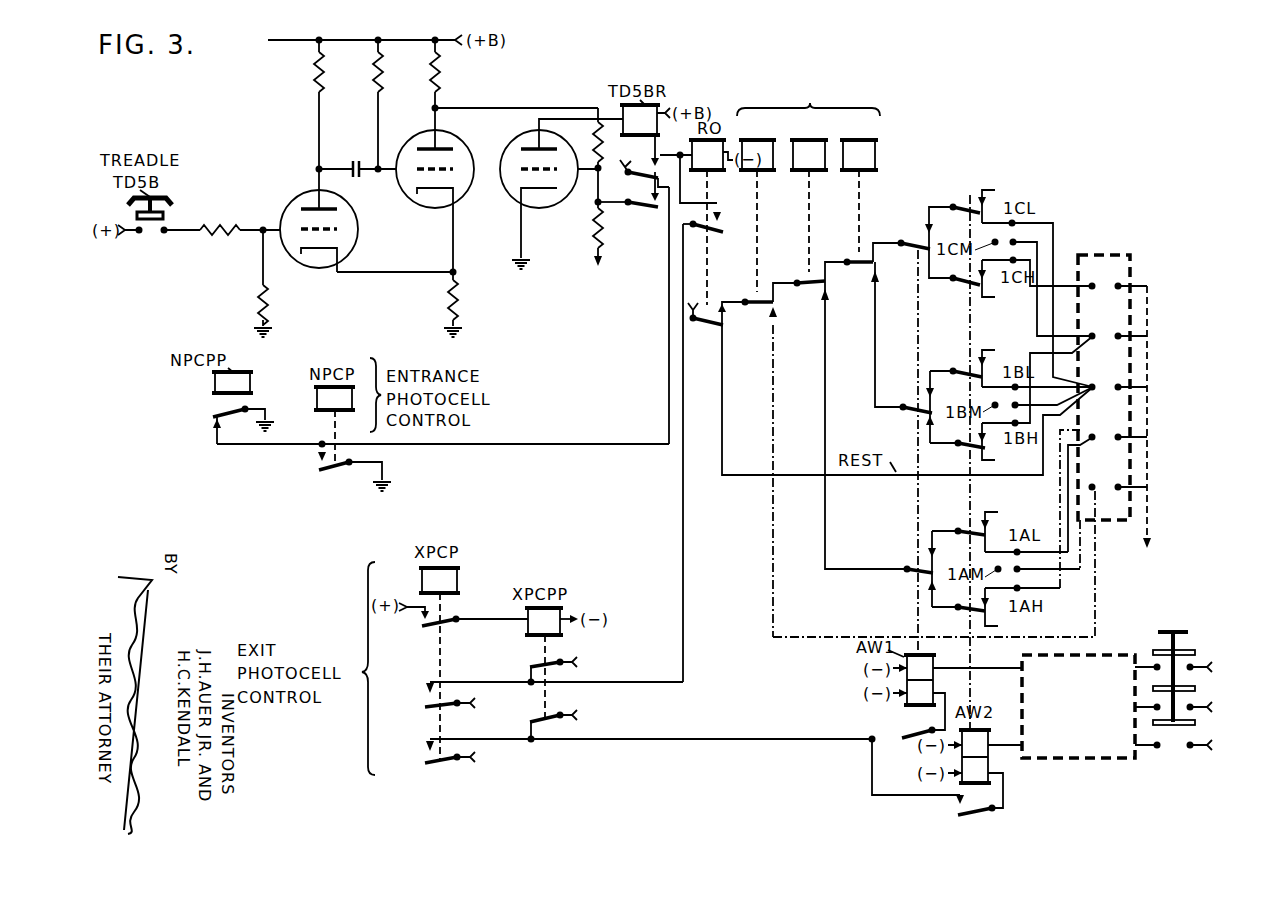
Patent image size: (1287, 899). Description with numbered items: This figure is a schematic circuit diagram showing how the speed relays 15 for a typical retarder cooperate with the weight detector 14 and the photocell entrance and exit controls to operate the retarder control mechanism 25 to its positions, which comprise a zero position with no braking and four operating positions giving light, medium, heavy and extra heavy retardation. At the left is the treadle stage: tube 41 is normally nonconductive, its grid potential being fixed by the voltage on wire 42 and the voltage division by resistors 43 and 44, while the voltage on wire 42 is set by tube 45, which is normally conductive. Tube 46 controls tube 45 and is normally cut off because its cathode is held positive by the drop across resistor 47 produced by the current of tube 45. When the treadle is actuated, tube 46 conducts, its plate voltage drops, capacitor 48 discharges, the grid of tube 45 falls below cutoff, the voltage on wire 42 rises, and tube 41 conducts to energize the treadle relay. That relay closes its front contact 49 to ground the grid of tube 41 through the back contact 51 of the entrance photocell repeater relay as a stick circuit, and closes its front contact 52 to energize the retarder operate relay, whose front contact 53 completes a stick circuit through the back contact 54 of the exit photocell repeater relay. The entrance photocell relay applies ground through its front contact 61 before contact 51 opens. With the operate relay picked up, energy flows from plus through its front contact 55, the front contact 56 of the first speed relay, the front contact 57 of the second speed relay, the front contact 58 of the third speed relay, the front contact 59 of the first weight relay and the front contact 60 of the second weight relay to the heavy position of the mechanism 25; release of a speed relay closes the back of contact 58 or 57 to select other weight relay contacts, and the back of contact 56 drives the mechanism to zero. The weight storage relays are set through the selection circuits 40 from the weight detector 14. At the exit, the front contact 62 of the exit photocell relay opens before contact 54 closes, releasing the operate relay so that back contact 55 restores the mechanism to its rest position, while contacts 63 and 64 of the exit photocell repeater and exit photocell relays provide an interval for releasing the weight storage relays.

The weight detector 14 is at (1180, 632).
The speed relays 15 is at (801, 175).
The retarder control mechanism 25 is at (1090, 250).
The selection circuits 40 is at (1100, 655).
The tube 41 is at (511, 143).
The wire 42 is at (462, 108).
The resistor 43 is at (596, 144).
The resistor 44 is at (594, 222).
The tube 45 is at (409, 141).
The tube 46 is at (296, 195).
The resistor 47 is at (459, 294).
The capacitor 48 is at (355, 161).
The front contact of relay TD5BR 49 is at (628, 214).
The back contact of relay NPCPP 51 is at (230, 422).
The front contact of relay TD5BR 52 is at (634, 171).
The front contact of relay RO 53 is at (708, 238).
The back contact of relay XPCPP 54 is at (536, 662).
The contact of relay RO 55 is at (703, 316).
The contact of relay AS 56 is at (768, 306).
The contact of relay BS 57 is at (818, 285).
The contact of relay CS 58 is at (869, 266).
The front contact of relay AW1 59 is at (917, 242).
The front contact of relay AW2 60 is at (958, 245).
The front contact of relay NPCP 61 is at (355, 478).
The front contact of relay XPCP 62 is at (440, 708).
The contact of relay XPCPP 63 is at (541, 719).
The contact of relay XPCP 64 is at (449, 764).